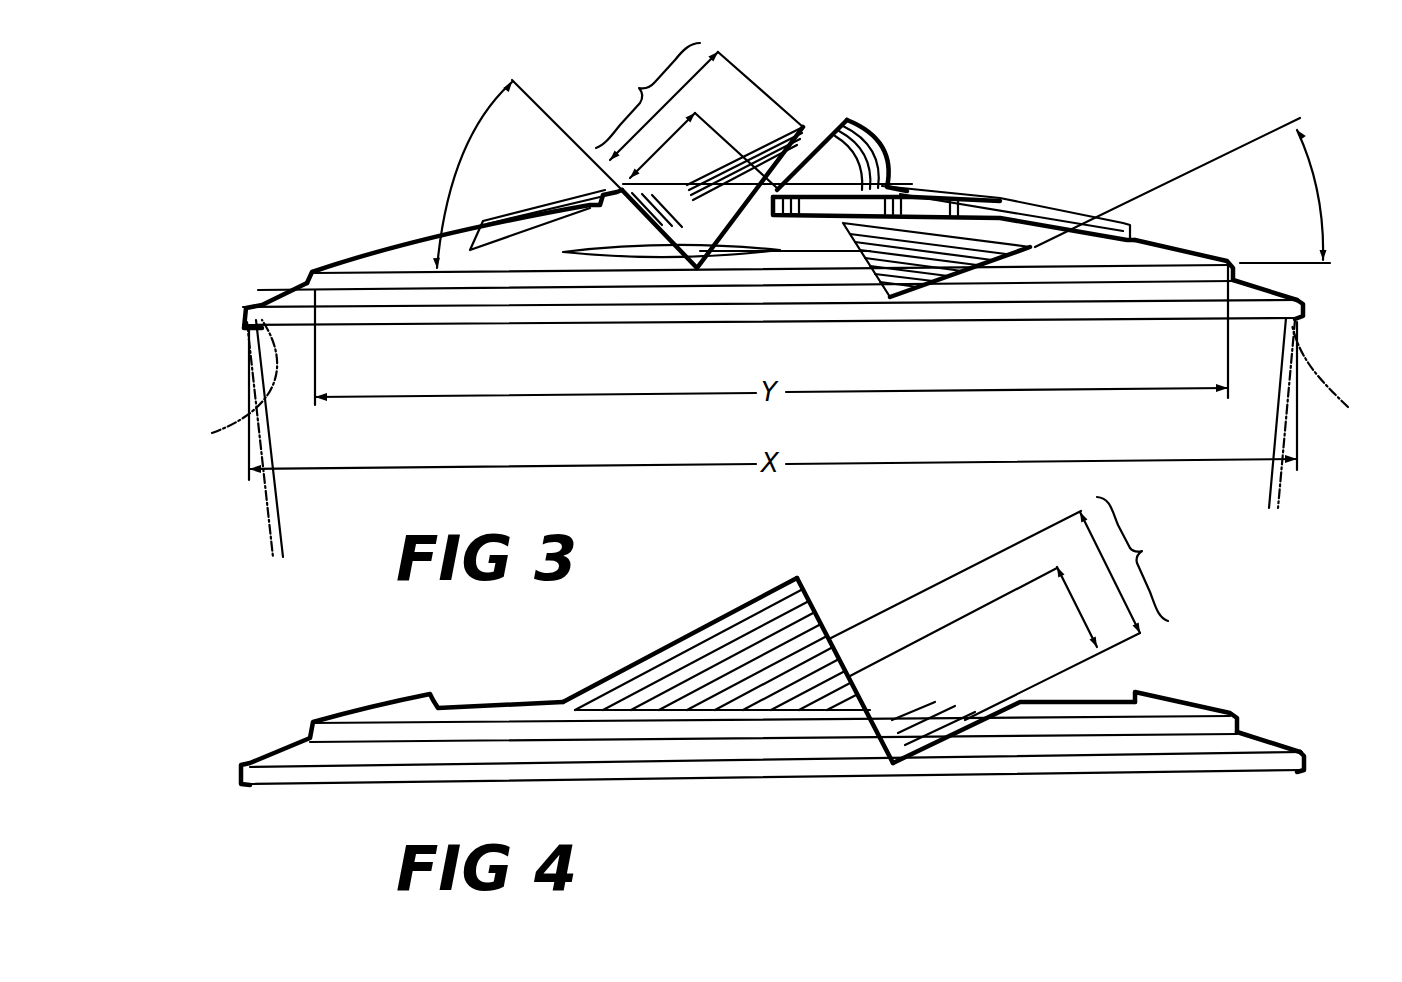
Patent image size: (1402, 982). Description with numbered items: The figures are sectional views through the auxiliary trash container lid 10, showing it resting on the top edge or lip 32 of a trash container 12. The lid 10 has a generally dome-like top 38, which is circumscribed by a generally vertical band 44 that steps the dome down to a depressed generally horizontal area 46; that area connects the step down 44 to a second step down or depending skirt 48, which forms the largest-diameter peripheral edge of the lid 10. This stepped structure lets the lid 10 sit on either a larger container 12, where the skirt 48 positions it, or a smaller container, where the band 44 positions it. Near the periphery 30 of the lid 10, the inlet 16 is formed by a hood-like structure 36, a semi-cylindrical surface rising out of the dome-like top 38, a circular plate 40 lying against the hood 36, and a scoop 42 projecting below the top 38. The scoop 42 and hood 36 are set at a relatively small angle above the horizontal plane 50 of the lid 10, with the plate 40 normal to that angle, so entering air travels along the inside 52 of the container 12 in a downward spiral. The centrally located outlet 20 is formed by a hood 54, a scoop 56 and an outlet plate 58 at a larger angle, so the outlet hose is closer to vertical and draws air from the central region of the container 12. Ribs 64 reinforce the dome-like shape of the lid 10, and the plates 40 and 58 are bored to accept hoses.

In FIG. 3, the auxiliary trash container lid 10 is at (238, 206).
In FIG. 4, the auxiliary trash container lid 10 is at (262, 686).
In FIG. 3, the trash container 12 is at (270, 548).
In FIG. 4, the inlet 16 is at (1004, 608).
In FIG. 3, the outlet 20 is at (618, 155).
In FIG. 3, the periphery 30 is at (243, 314).
In FIG. 3, the top edge or lip 32 is at (777, 389).
In FIG. 4, the hood-like structure 36 is at (703, 633).
In FIG. 3, the dome-like top 38 is at (400, 243).
In FIG. 4, the circular plate 40 is at (827, 610).
In FIG. 4, the scoop 42 is at (940, 720).
In FIG. 3, the generally vertical band 44 is at (1138, 273).
In FIG. 4, the generally vertical band 44 is at (1168, 727).
In FIG. 3, the depressed generally horizontal area 46 is at (1123, 293).
In FIG. 4, the depressed generally horizontal area 46 is at (1127, 747).
In FIG. 3, the depending skirt 48 is at (1307, 313).
In FIG. 4, the depending skirt 48 is at (1307, 770).
In FIG. 3, the horizontal plane 50 is at (1307, 267).
In FIG. 3, the inside 52 is at (282, 512).
In FIG. 3, the hood 54 is at (877, 147).
In FIG. 3, the scoop 56 is at (690, 245).
In FIG. 3, the outlet plate 58 is at (823, 153).
In FIG. 3, the ribs 64 is at (1040, 213).